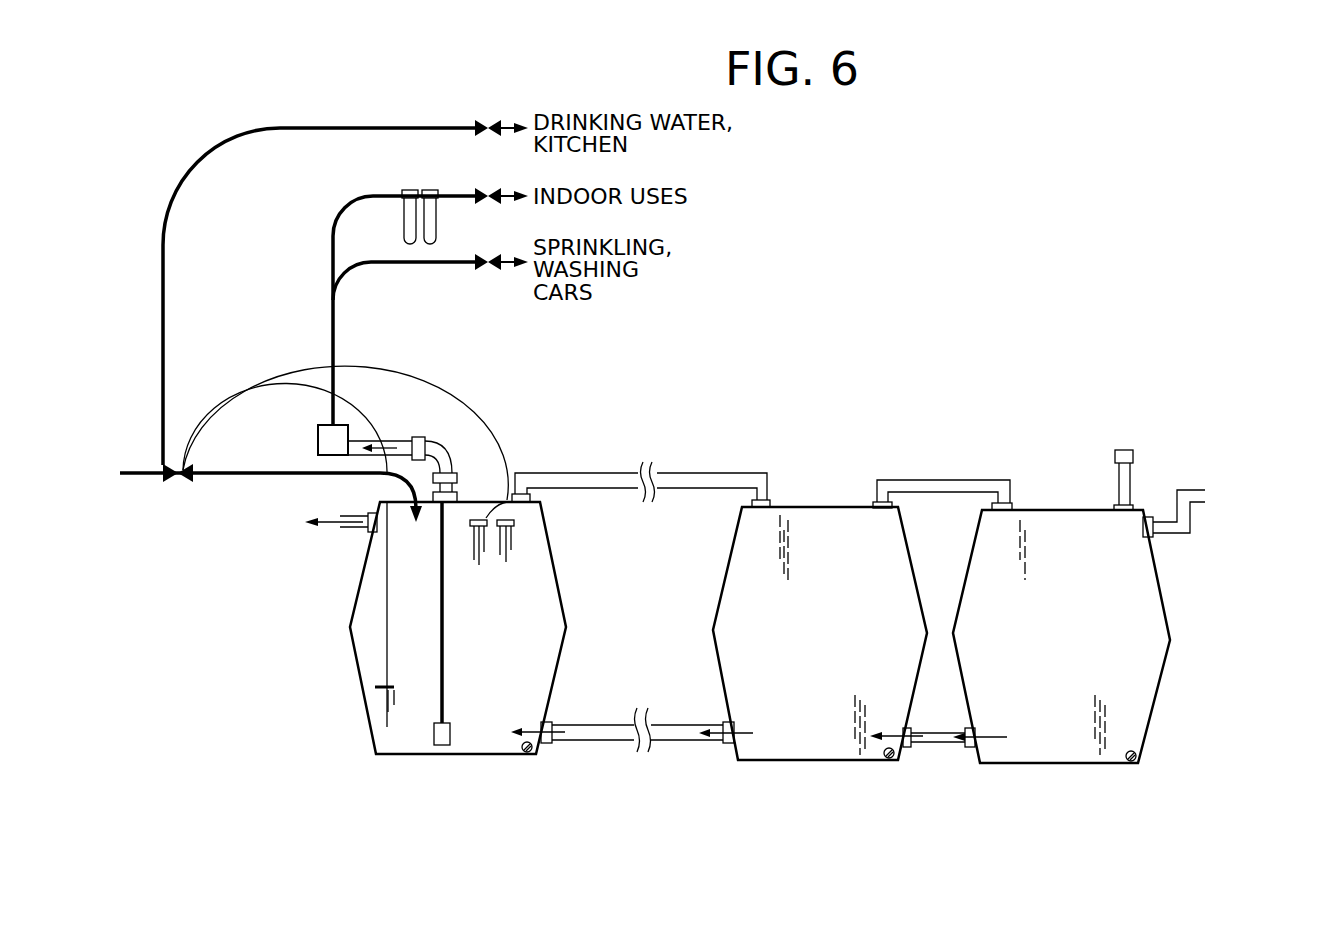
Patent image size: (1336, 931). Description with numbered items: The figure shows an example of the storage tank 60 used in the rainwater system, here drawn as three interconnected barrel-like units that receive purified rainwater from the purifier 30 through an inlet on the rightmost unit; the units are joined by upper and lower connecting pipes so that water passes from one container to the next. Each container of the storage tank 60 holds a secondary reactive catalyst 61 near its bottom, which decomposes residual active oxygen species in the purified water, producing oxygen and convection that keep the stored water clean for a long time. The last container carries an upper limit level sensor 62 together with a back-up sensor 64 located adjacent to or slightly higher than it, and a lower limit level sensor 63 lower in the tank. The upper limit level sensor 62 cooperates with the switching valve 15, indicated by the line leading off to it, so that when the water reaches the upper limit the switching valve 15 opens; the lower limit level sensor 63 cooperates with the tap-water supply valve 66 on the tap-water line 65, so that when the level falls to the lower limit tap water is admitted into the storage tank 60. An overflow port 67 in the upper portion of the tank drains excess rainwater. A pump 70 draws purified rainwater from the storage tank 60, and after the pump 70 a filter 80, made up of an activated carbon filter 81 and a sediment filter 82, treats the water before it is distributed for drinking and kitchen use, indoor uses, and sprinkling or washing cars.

The switching valve 15 is at (507, 500).
The purifier 30 is at (1204, 497).
The storage tank 60 is at (497, 500).
The secondary reactive catalyst 61 is at (527, 755).
The upper limit level sensor 62 is at (518, 520).
The lower limit level sensor 63 is at (375, 688).
The back-up sensor 64 is at (473, 530).
The supply pipe 65 is at (258, 480).
The tap-water supply valve 66 is at (170, 485).
The overflow port 67 is at (355, 537).
The pump 70 is at (318, 443).
The filter 80 is at (366, 133).
The activated carbon filter 81 is at (404, 218).
The sediment filter 82 is at (428, 190).